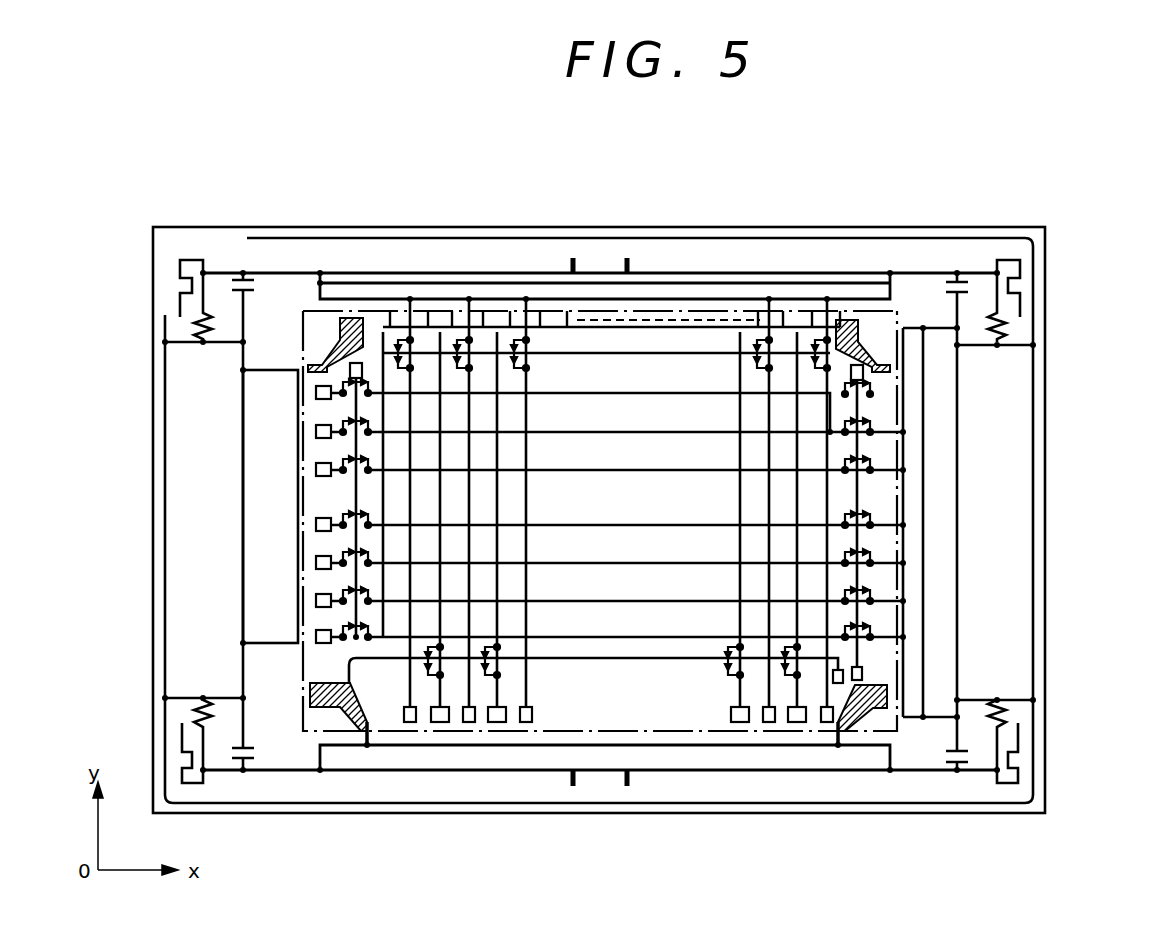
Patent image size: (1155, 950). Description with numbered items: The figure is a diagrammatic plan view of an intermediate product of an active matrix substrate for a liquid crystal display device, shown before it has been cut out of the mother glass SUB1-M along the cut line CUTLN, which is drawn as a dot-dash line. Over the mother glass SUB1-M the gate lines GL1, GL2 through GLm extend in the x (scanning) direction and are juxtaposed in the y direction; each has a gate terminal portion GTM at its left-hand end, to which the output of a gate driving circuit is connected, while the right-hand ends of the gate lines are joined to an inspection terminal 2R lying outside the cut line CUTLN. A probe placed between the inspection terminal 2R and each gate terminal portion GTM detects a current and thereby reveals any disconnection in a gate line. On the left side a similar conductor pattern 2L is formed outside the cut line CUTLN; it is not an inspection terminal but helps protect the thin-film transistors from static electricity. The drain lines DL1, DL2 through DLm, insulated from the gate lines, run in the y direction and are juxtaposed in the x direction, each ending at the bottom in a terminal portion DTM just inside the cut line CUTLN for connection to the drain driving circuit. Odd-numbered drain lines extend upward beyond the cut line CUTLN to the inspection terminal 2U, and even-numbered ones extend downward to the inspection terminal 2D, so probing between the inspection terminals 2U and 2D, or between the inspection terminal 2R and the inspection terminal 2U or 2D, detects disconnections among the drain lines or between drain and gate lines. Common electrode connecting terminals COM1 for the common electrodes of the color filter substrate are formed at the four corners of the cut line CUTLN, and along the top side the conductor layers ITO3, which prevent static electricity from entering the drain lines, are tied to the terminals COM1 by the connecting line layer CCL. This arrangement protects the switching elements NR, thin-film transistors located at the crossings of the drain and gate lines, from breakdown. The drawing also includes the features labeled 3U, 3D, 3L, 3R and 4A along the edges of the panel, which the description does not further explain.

The mother glass SUB1-M is at (945, 238).
The inspection terminal 2U is at (542, 272).
The inspection terminal 2D is at (600, 775).
The conductor pattern 2L is at (241, 497).
The inspection terminal 2R is at (957, 493).
The upper protection circuit line 3U is at (640, 350).
The lower protection circuit line 3D is at (700, 660).
The left protection circuit line 3L is at (353, 497).
The right protection circuit line 3R is at (858, 543).
The protection element 4A is at (192, 324).
The common electrode connecting terminal COM1 is at (335, 325).
The switching element NR is at (398, 343).
The conductor layer ITO3 is at (432, 320).
The connecting line layer CCL is at (497, 322).
The cut line CUTLN is at (640, 731).
The gate terminal portion GTM is at (316, 393).
The terminal portion DTM is at (506, 714).
The gate line GL1 is at (805, 395).
The gate line GL2 is at (868, 432).
The gate line GLm is at (870, 641).
The drain line DL1 is at (410, 680).
The drain line DL2 is at (440, 683).
The drain line DLm is at (823, 702).